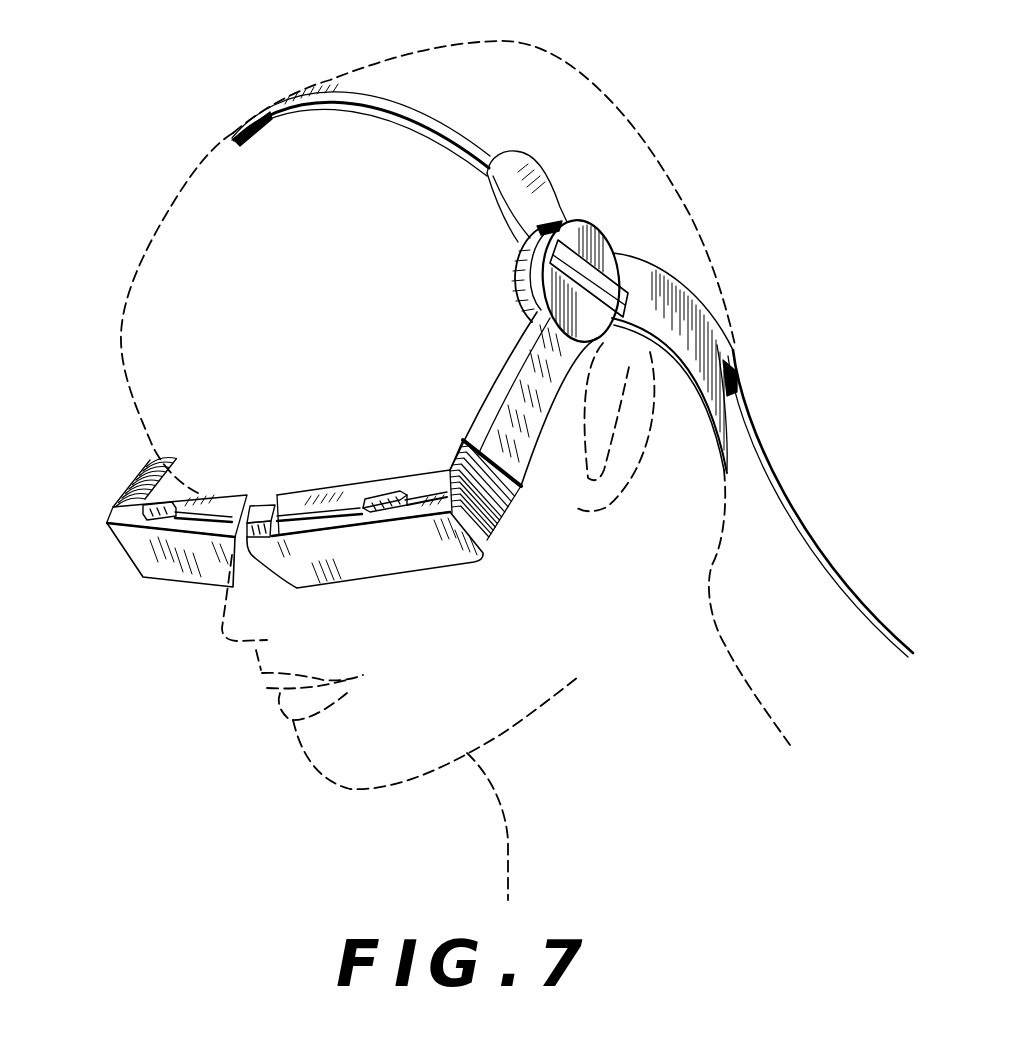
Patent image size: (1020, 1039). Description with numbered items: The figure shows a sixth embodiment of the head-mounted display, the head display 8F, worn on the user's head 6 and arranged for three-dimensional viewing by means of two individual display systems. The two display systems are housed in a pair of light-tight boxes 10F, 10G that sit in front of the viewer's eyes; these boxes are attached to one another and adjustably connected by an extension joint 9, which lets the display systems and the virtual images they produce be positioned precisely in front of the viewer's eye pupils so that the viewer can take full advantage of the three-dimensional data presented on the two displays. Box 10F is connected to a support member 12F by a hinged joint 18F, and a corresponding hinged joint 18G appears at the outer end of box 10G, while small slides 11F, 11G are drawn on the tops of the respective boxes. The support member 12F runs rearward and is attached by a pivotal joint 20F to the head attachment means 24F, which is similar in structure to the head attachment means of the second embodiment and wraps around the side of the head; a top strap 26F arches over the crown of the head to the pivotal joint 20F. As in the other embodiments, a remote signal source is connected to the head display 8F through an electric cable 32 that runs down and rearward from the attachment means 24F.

The user's head 6 is at (632, 128).
The head display 8F is at (497, 289).
The extension joint 9 is at (262, 505).
The box 10F is at (390, 588).
The box 10G is at (192, 585).
The adjustment slide on eyepiece 10F 11F is at (388, 497).
The adjustment slide on eyepiece 10G 11G is at (162, 505).
The support member 12F is at (543, 388).
The hinged joint 18F is at (500, 513).
The ribbed hinge joint (second eyepiece) 18G is at (133, 482).
The pivotal joint 20F is at (597, 232).
The head attachment means 24F is at (695, 363).
The top headband strap 26F is at (423, 117).
The electric cable 32 is at (827, 556).